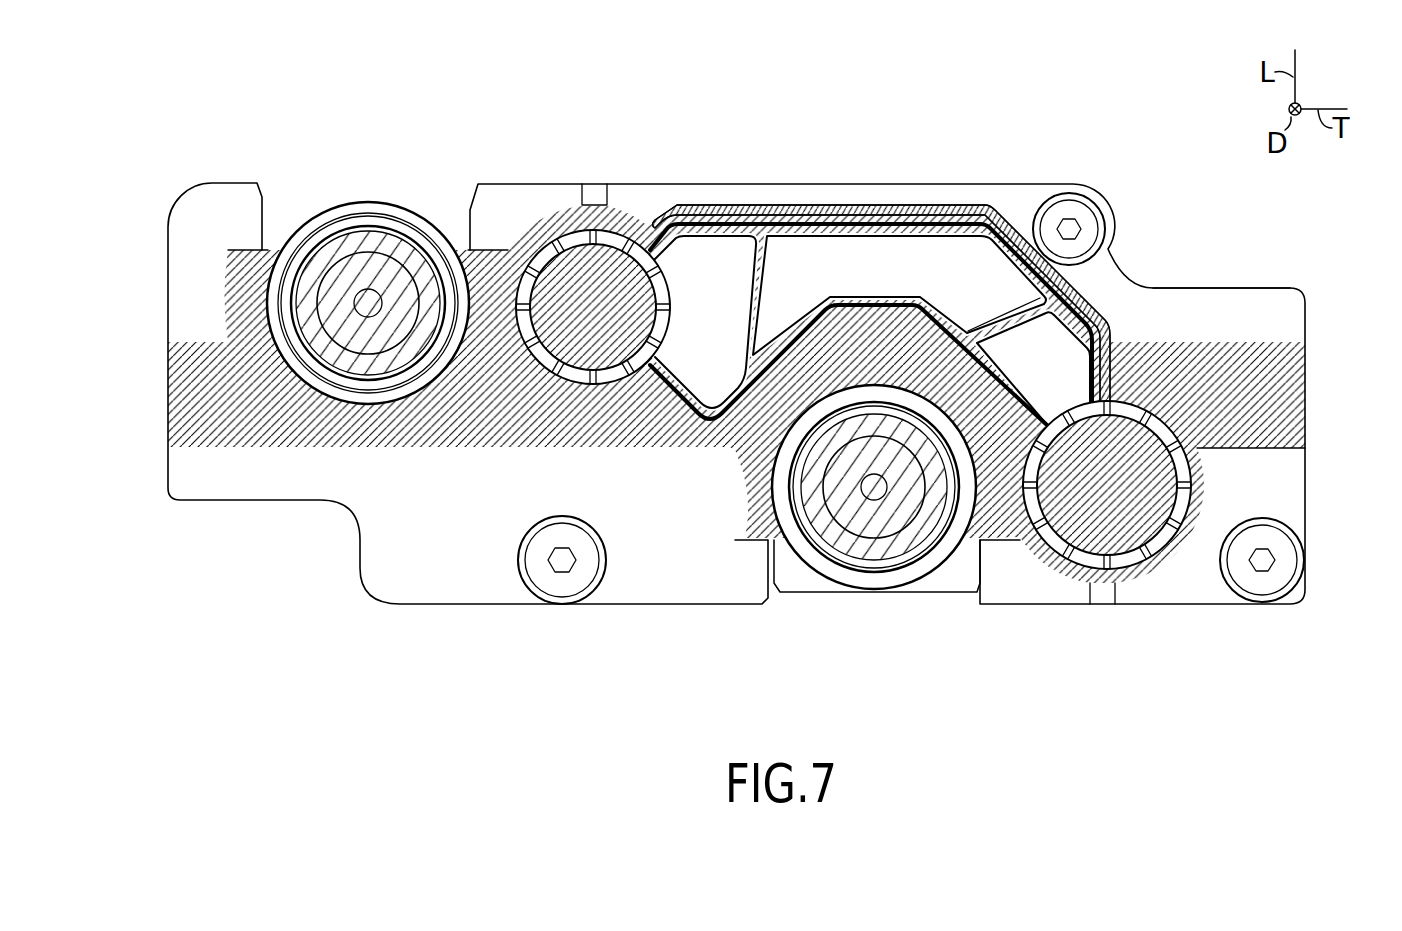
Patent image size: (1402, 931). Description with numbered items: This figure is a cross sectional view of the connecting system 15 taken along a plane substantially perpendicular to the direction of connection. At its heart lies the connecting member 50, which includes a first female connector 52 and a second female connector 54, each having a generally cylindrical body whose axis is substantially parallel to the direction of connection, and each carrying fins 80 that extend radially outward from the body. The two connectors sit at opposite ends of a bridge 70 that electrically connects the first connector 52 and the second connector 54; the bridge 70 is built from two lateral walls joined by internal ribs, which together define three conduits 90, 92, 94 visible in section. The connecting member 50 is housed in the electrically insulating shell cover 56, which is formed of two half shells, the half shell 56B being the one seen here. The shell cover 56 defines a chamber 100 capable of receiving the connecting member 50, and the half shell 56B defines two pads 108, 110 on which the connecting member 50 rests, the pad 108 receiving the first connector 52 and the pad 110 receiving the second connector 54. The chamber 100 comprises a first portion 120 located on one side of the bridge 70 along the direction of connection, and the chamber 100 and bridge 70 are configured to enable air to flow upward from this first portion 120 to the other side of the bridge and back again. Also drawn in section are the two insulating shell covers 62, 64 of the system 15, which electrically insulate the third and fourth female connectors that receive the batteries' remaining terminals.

The system 15 is at (335, 140).
The connecting member 50 is at (713, 228).
The first female connector 52 is at (600, 383).
The second female connector 54 is at (1196, 533).
The shell cover 56 is at (1268, 320).
The half shell 56B is at (1262, 405).
The insulating shell cover 62 is at (308, 378).
The insulating shell cover 64 is at (872, 572).
The bridge 70 is at (797, 233).
The fins 80 is at (1162, 548).
The conduit 90 is at (700, 312).
The conduit 92 is at (957, 295).
The conduit 94 is at (1034, 377).
The chamber 100 is at (925, 245).
The pad 108 is at (590, 313).
The pad 110 is at (1085, 487).
The first portion of the chamber 120 is at (850, 265).